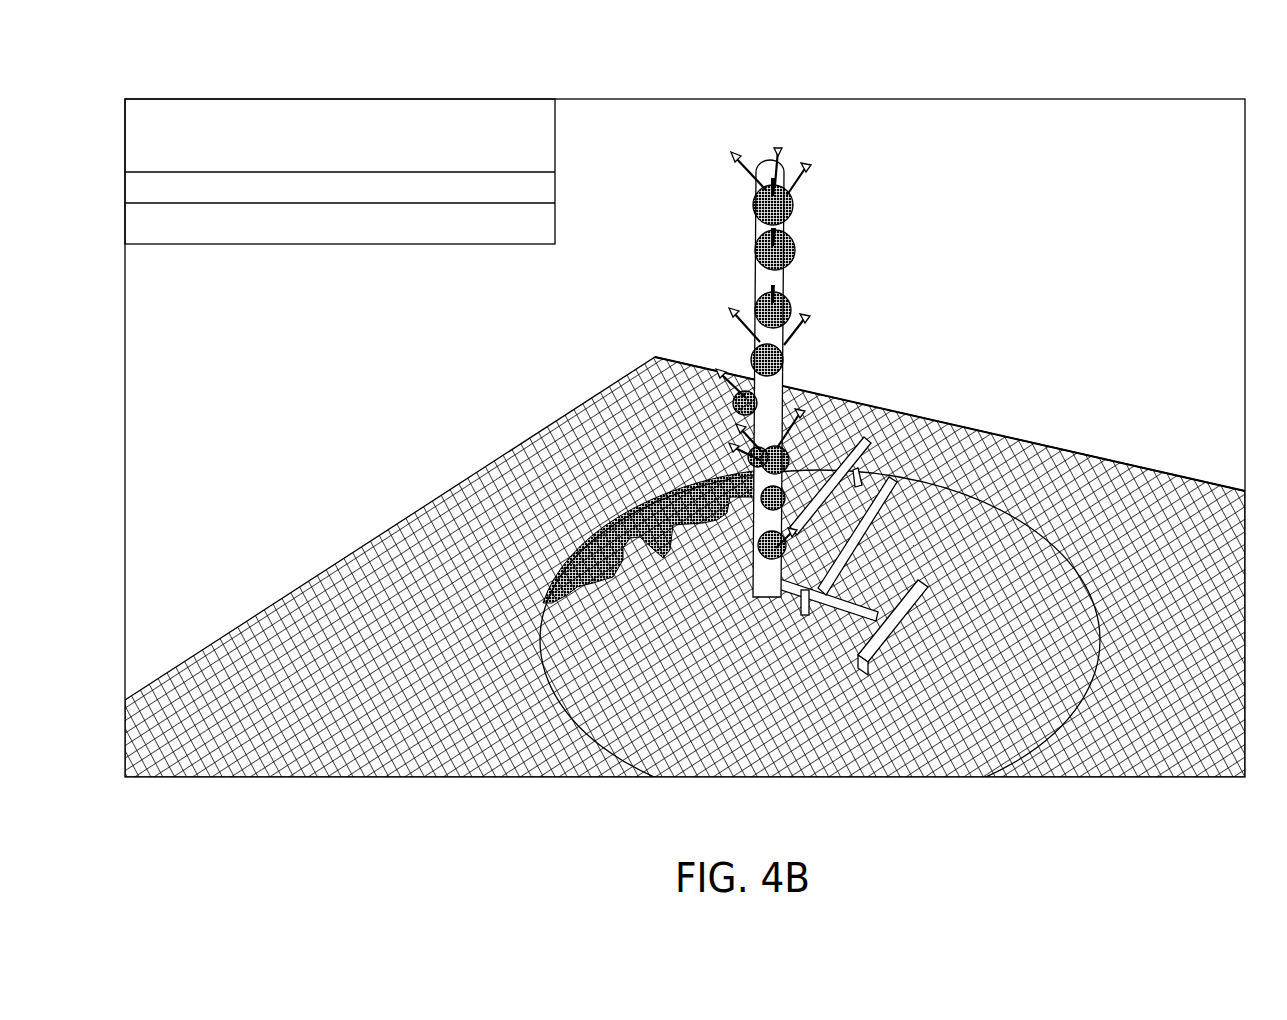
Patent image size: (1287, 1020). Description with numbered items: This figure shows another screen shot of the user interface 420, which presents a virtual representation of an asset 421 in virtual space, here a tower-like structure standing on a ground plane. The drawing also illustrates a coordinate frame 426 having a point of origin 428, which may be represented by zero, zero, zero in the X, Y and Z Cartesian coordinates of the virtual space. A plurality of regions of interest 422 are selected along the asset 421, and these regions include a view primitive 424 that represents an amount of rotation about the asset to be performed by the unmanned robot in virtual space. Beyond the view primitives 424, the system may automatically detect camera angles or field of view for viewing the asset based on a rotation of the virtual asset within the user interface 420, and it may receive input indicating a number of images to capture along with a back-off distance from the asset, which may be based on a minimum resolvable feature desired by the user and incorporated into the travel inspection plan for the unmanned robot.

The user interface 420 is at (1158, 86).
The asset 421 is at (784, 280).
The regions of interest 422 is at (733, 312).
The view primitive 424 is at (768, 362).
The coordinate frame 426 is at (1000, 448).
The point of origin 428 is at (1178, 478).